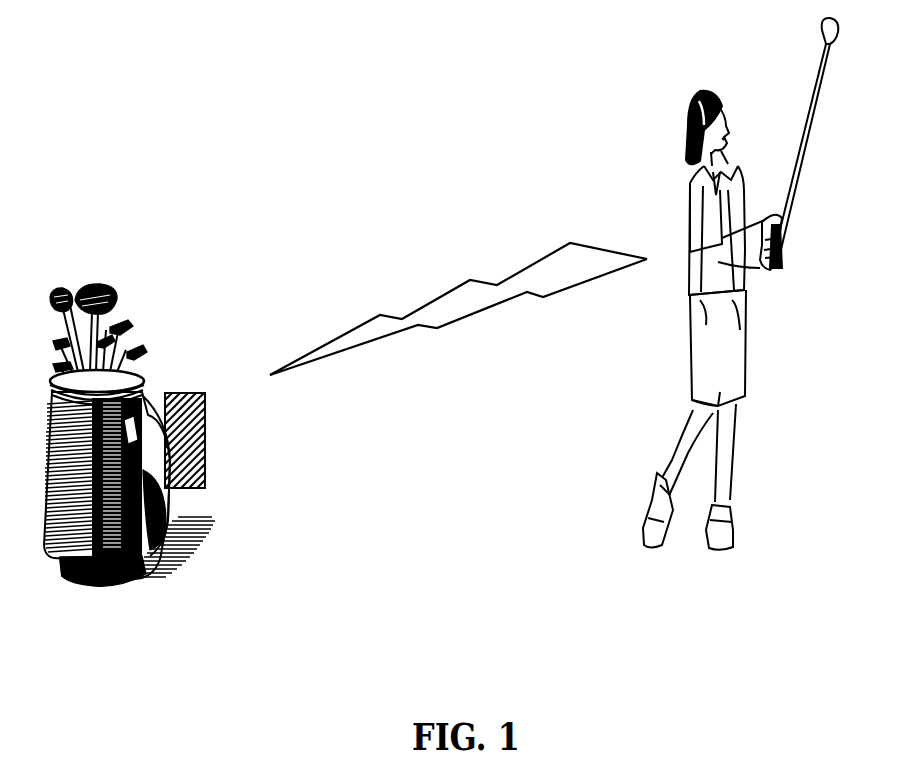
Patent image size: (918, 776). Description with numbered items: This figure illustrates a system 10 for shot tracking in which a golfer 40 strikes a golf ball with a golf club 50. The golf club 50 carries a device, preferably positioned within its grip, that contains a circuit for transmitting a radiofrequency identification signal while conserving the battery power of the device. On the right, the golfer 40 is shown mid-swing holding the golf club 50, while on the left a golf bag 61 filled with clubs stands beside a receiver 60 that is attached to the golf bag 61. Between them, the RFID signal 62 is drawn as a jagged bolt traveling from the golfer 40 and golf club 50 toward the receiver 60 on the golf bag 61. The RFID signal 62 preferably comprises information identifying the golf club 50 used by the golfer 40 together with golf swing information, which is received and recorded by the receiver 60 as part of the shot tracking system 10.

The golf system 10 is at (378, 164).
The golfer 40 is at (713, 88).
The golf club 50 is at (809, 143).
The receiver 60 is at (205, 483).
The golf bag 61 is at (125, 272).
The RFID signal 62 is at (543, 297).